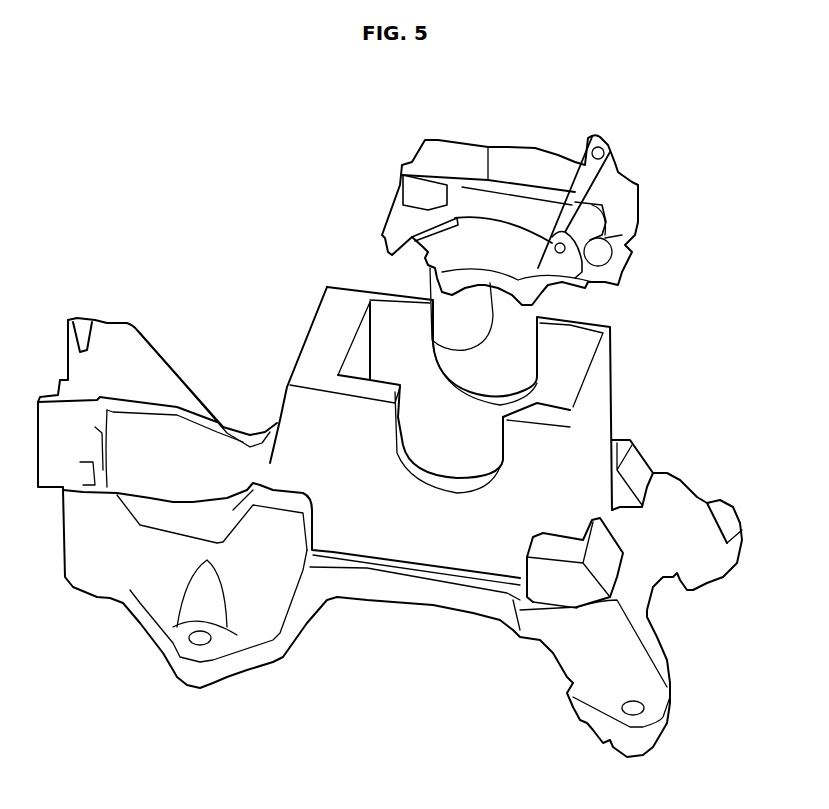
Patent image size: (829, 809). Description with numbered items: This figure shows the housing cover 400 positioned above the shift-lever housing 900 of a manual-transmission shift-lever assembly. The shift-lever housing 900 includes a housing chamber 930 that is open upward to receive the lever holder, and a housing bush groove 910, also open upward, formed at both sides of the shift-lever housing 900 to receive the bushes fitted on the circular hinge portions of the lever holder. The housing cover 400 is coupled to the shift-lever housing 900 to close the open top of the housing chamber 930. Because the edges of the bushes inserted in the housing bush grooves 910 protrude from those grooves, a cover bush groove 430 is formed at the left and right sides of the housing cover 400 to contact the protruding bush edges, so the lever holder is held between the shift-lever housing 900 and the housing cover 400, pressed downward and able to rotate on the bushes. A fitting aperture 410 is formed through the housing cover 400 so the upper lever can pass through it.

The housing cover 400 is at (507, 221).
The fitting aperture 410 is at (520, 207).
The cover bush groove 430 is at (433, 338).
The shift-lever housing 900 is at (394, 522).
The housing bush groove 910 is at (470, 393).
The housing chamber 930 is at (435, 400).